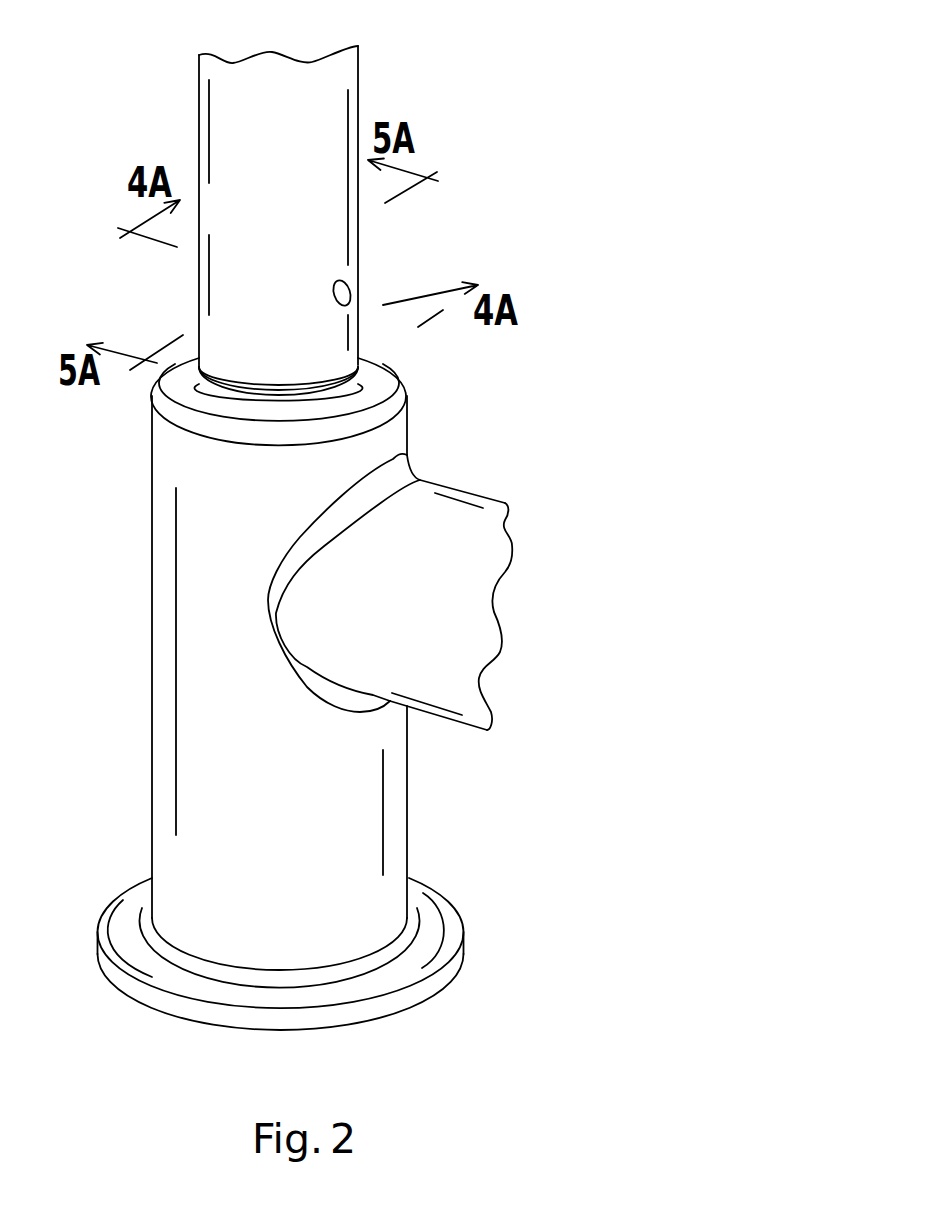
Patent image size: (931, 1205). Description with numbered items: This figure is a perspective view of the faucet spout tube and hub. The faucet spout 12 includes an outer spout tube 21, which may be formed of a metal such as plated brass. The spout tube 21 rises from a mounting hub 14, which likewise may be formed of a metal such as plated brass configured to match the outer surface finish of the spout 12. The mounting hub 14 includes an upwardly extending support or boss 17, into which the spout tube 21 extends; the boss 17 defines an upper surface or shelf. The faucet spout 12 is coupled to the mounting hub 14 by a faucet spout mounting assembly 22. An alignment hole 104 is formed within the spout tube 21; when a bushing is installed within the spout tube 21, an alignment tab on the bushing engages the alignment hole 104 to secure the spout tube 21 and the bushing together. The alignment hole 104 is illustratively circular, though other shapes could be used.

The faucet spout 12 is at (358, 63).
The mounting hub 14 is at (163, 632).
The support or boss 17 is at (220, 395).
The outer spout tube 21 is at (222, 70).
The faucet spout mounting assembly 22 is at (513, 212).
The alignment hole 104 is at (353, 293).